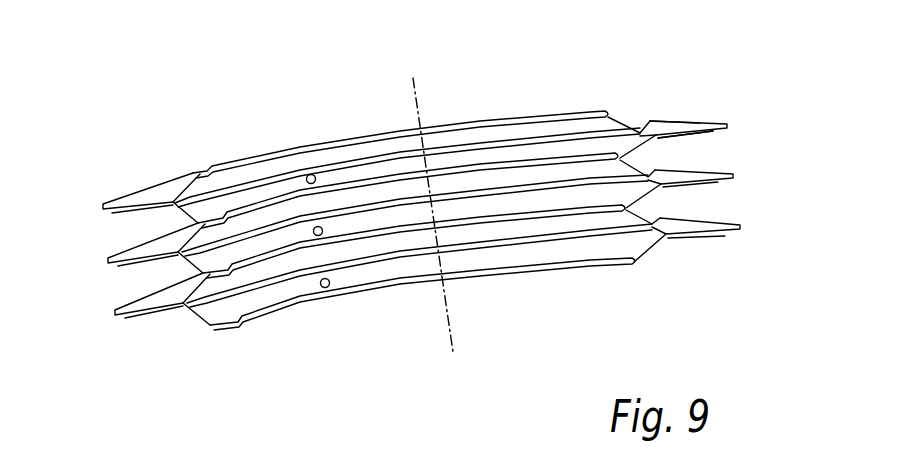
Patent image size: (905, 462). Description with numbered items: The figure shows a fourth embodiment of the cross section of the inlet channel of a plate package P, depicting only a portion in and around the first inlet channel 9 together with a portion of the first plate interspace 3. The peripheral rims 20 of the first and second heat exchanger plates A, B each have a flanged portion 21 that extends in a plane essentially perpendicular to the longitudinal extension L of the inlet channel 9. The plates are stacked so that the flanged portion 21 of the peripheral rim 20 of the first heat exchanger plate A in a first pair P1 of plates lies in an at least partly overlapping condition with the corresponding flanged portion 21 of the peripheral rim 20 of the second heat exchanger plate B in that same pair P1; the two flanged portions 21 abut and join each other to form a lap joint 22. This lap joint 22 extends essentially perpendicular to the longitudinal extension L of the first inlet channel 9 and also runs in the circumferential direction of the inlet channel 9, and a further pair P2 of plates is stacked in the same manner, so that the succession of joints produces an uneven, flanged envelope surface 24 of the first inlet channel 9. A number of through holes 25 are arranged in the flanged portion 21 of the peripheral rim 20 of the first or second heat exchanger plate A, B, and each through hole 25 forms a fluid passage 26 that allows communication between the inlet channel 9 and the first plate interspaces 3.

The first plate interspace 3 is at (147, 242).
The first inlet channel 9 is at (495, 148).
The peripheral rim 20 is at (640, 146).
The flanged portion 21 is at (600, 110).
The lap joint 22 is at (641, 168).
The flanged envelope surface 24 is at (552, 250).
The through hole 25 is at (318, 236).
The fluid passage 26 is at (322, 236).
The first heat exchanger plate A is at (688, 123).
The second heat exchanger plate B is at (720, 133).
The plate package P is at (455, 107).
The first pair of first and second heat exchanger plates P1 is at (723, 118).
The second position P2 is at (733, 232).
The longitudinal extension L is at (437, 229).